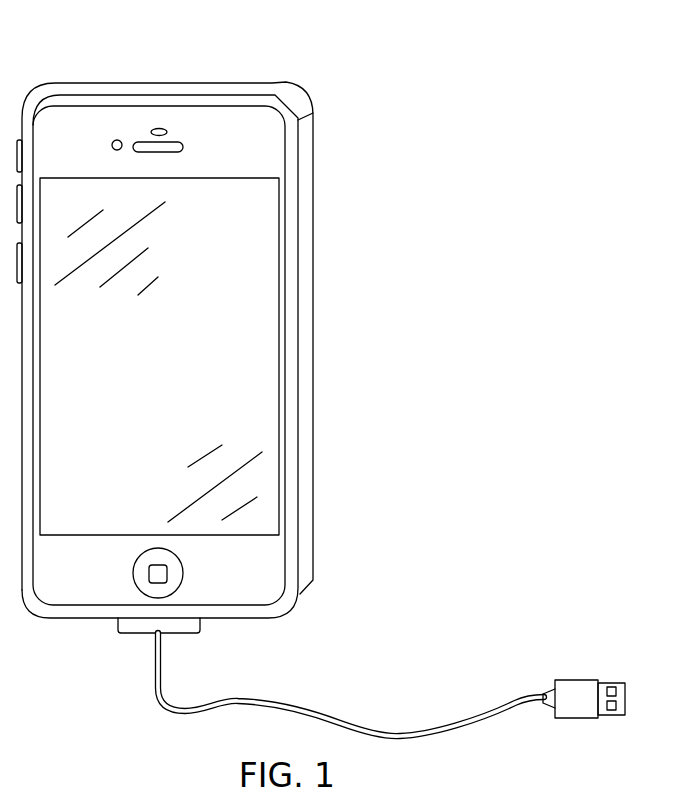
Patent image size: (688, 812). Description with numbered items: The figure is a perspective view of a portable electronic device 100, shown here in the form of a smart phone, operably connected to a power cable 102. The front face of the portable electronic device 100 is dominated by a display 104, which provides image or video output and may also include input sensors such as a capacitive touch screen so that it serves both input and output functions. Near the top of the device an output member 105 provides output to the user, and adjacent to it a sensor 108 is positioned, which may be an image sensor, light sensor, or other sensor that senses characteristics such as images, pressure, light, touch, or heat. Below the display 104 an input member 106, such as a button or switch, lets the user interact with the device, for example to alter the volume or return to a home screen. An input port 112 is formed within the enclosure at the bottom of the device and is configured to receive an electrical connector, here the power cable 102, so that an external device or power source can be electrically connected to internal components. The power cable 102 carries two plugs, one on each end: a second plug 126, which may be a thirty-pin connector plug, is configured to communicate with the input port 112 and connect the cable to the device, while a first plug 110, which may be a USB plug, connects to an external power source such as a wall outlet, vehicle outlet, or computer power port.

The portable electronic device 100 is at (315, 338).
The power cable 102 is at (458, 720).
The display 104 is at (272, 238).
The output member 105 is at (178, 142).
The input member 106 is at (183, 572).
The sensor 108 is at (113, 140).
The first plug 110 is at (572, 680).
The input port 112 is at (110, 620).
The second plug 126 is at (200, 627).